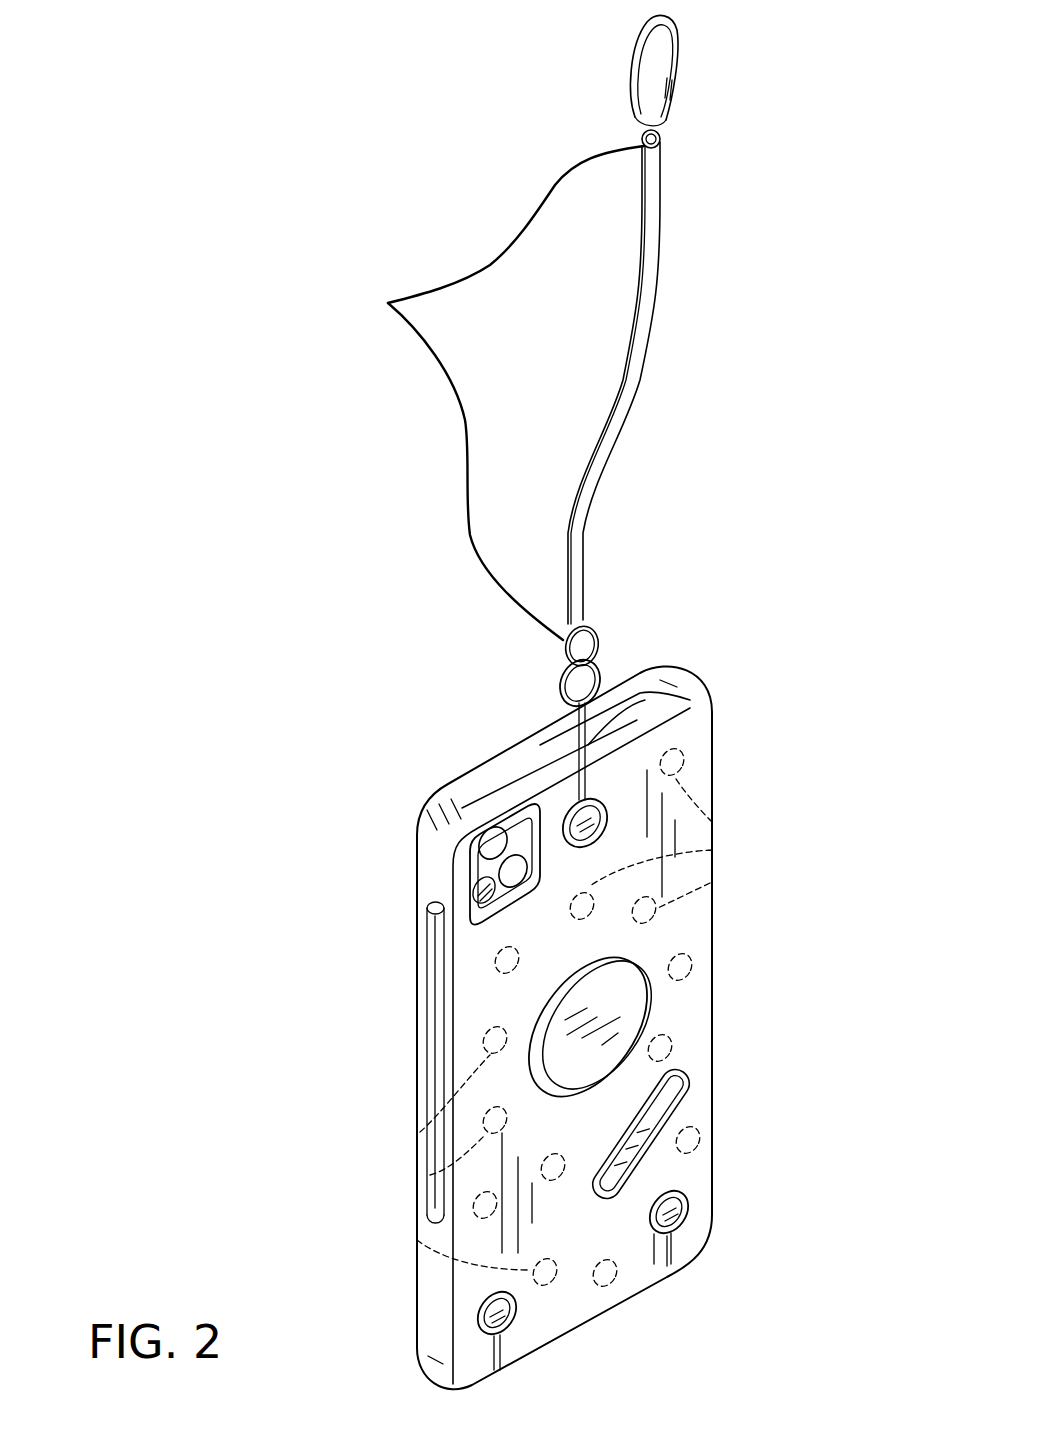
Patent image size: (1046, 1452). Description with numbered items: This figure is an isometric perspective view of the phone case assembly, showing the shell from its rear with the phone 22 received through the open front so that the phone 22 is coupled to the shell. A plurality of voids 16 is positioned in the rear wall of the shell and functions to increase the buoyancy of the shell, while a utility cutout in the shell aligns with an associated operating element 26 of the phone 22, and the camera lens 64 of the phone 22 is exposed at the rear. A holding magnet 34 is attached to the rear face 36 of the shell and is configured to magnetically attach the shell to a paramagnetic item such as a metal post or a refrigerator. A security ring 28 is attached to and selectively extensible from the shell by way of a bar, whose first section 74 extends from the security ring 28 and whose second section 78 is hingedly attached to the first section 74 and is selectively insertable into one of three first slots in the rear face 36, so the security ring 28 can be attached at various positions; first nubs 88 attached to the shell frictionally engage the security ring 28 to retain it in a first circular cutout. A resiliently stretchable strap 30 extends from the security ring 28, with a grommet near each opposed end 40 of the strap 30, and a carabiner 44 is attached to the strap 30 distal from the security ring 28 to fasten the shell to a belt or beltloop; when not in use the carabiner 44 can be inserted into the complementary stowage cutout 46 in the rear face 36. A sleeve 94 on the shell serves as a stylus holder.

The voids 16 is at (710, 883).
The phone 22 is at (505, 1000).
The operating element 26 is at (482, 858).
The security ring 28 is at (563, 692).
The strap 30 is at (638, 333).
The holding magnet 34 is at (617, 1005).
The rear face 36 is at (573, 963).
The opposed end 40 is at (388, 303).
The carabiner 44 is at (638, 58).
The stowage cutout 46 is at (645, 1117).
The camera lens 64 is at (488, 882).
The first section 74 is at (645, 656).
The second section 78 is at (688, 698).
The first nubs 88 is at (497, 1370).
The sleeve 94 is at (437, 1063).